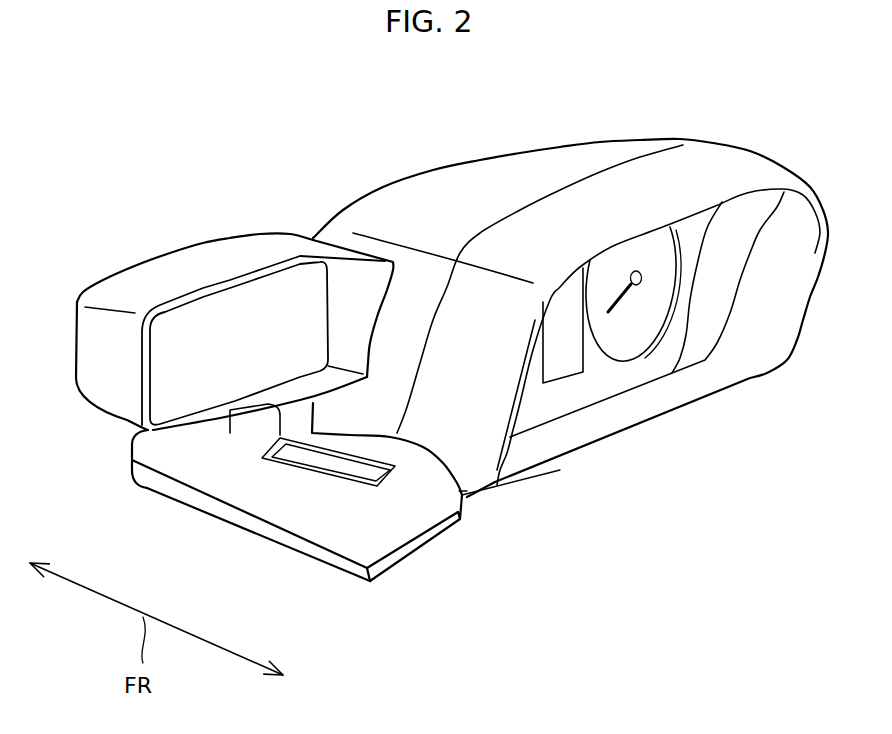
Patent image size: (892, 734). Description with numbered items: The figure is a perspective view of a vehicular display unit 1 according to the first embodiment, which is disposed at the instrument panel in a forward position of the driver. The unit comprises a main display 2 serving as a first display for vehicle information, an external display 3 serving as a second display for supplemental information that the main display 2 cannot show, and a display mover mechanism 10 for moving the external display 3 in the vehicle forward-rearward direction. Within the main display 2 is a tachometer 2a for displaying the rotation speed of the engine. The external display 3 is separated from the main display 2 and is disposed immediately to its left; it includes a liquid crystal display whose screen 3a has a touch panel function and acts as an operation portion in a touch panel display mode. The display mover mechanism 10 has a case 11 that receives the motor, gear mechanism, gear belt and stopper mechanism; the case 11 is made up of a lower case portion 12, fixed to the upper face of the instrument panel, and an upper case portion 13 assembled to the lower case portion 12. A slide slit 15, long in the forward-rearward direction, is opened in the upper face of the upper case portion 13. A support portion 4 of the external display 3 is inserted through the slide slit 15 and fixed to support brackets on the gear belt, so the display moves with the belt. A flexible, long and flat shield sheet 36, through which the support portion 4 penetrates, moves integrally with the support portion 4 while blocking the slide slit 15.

The vehicular display unit 1 is at (362, 155).
The main display 2 is at (690, 350).
The tachometer 2a is at (623, 343).
The external display 3 is at (93, 332).
The screen 3a is at (220, 332).
The support portion 4 is at (260, 422).
The display mover mechanism 10 is at (258, 490).
The case 11 is at (503, 628).
The lower case portion 12 is at (428, 515).
The upper case portion 13 is at (458, 532).
The slide slit 15 is at (463, 494).
The shield sheet 36 is at (335, 457).